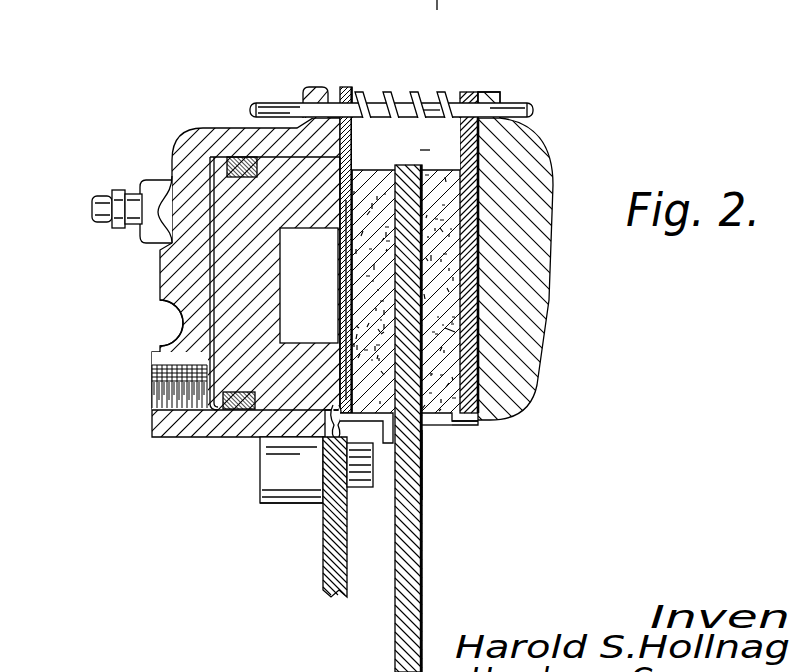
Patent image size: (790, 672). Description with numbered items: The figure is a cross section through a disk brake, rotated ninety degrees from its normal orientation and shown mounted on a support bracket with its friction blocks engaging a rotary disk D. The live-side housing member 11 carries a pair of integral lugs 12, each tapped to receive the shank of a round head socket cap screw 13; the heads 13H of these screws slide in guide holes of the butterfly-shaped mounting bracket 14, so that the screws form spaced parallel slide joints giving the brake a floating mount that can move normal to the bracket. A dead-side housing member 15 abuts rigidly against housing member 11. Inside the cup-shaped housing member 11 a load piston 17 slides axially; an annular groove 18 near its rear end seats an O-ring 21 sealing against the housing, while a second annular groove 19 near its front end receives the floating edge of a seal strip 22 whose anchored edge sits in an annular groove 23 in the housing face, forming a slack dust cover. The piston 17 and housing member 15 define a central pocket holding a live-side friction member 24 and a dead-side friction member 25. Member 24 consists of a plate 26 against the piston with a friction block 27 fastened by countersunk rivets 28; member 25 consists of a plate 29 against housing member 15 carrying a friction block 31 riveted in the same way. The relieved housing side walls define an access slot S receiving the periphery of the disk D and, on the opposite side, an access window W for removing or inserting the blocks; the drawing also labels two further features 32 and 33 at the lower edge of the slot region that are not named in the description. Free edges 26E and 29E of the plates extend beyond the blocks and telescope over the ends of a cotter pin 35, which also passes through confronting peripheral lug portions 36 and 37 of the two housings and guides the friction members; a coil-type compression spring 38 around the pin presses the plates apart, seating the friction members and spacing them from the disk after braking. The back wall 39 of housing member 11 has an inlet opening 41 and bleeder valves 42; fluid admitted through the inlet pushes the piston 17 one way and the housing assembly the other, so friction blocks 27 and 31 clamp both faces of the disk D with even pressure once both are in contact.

The live-side housing member 11 is at (158, 264).
The integral lugs 12 is at (263, 497).
The round head socket cap screw 13 is at (399, 470).
The heads of the cap screws 13H is at (360, 482).
The butterfly-shaped mounting bracket 14 is at (330, 555).
The dead-side housing member 15 is at (546, 305).
The load piston 17 is at (222, 312).
The annular groove 18 is at (250, 405).
The second annular groove 19 is at (344, 405).
The O-ring 21 is at (240, 438).
The seal strip 22 is at (352, 145).
The annular groove 23 is at (300, 440).
The live-side friction member 24 is at (339, 282).
The dead-side friction member 25 is at (474, 275).
The plate 26 is at (343, 304).
The free edge 26E is at (346, 87).
The friction block 27 is at (352, 256).
The countersunk rivets 28 is at (437, 185).
The plate 29 is at (480, 160).
The free edge 29E is at (472, 93).
The friction block 31 is at (450, 328).
The slot 32 is at (428, 436).
The lip 33 is at (480, 423).
The cotter pin 35 is at (430, 100).
The peripheral lug portion 36 is at (318, 86).
The peripheral lug portion 37 is at (536, 104).
The coil-type compression spring 38 is at (392, 95).
The back wall 39 is at (163, 300).
The inlet opening 41 is at (178, 397).
The bleeder valves 42 is at (128, 194).
The rotary disk D is at (410, 598).
The access slot S is at (437, 422).
The access window W is at (425, 151).